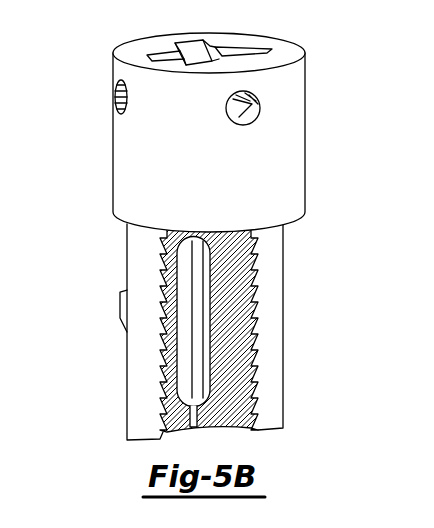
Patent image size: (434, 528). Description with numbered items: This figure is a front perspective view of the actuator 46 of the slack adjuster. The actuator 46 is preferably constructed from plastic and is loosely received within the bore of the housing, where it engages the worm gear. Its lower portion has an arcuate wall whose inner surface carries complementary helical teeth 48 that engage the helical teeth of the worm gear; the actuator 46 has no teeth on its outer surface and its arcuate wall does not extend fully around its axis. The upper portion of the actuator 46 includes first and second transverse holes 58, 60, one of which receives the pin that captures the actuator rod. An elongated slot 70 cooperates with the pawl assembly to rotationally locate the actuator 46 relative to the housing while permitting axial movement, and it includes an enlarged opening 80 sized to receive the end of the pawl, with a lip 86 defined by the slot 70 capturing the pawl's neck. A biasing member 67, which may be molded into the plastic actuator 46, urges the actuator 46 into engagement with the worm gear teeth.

The actuator 46 is at (290, 173).
The helical teeth 48 is at (233, 353).
The first transverse hole 58 is at (113, 97).
The second transverse hole 60 is at (252, 106).
The biasing member 67 is at (120, 305).
The elongated slot 70 is at (195, 262).
The enlarged opening 80 is at (220, 413).
The lip 86 is at (200, 317).